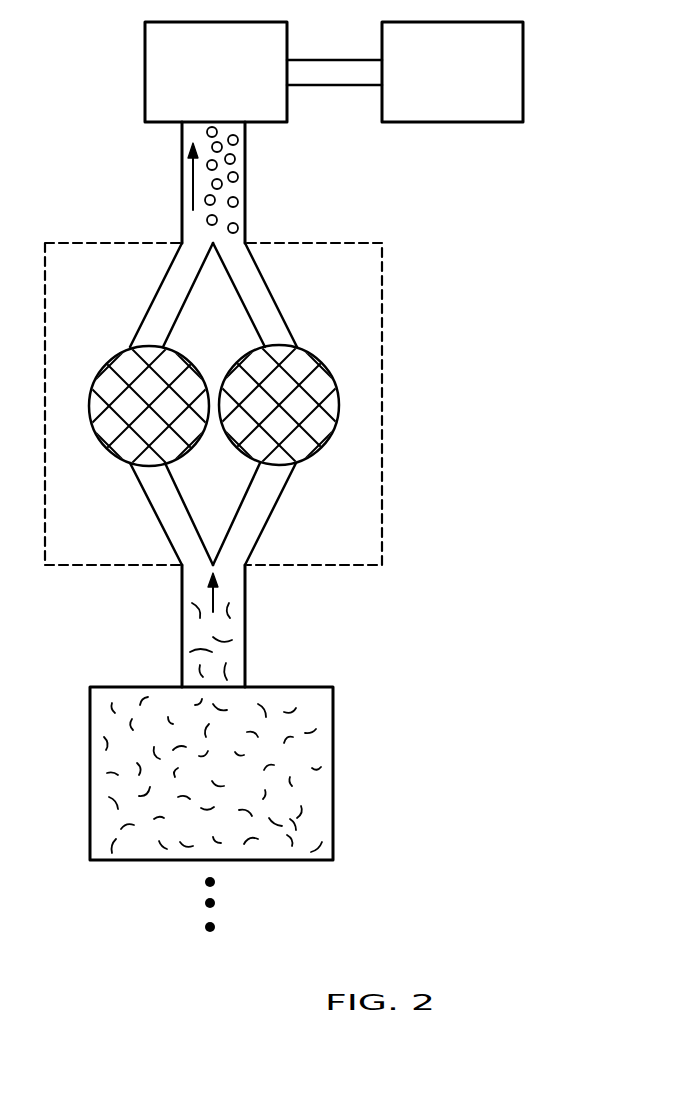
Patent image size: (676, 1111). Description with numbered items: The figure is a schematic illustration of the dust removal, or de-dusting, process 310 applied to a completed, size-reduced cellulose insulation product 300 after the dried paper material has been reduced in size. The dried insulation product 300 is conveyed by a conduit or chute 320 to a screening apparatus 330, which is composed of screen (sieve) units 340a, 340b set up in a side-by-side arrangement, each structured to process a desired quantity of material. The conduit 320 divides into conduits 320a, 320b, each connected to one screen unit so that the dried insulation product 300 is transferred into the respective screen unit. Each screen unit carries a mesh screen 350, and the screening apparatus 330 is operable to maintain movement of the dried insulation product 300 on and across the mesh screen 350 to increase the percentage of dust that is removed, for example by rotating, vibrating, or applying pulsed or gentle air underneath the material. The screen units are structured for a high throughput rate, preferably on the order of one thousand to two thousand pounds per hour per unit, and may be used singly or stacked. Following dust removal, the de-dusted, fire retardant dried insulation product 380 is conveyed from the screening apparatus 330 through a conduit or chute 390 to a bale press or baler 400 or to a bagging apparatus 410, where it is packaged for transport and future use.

The size reduced insulation product 300 is at (232, 635).
The dust removal (de-dusting) process 310 is at (50, 236).
The conduit or chute 320 is at (182, 628).
The conduit 320a is at (173, 530).
The conduit 320b is at (252, 530).
The screening apparatus 330 is at (220, 405).
The screen (sieve) unit 340a is at (107, 422).
The screen (sieve) unit 340b is at (323, 428).
The mesh screen 350 is at (306, 360).
The de-dusted, fire retardant dried insulation product 380 is at (232, 187).
The conduit or chute 390 is at (182, 182).
The bale press or baler 400 is at (145, 43).
The bagging apparatus 410 is at (523, 47).